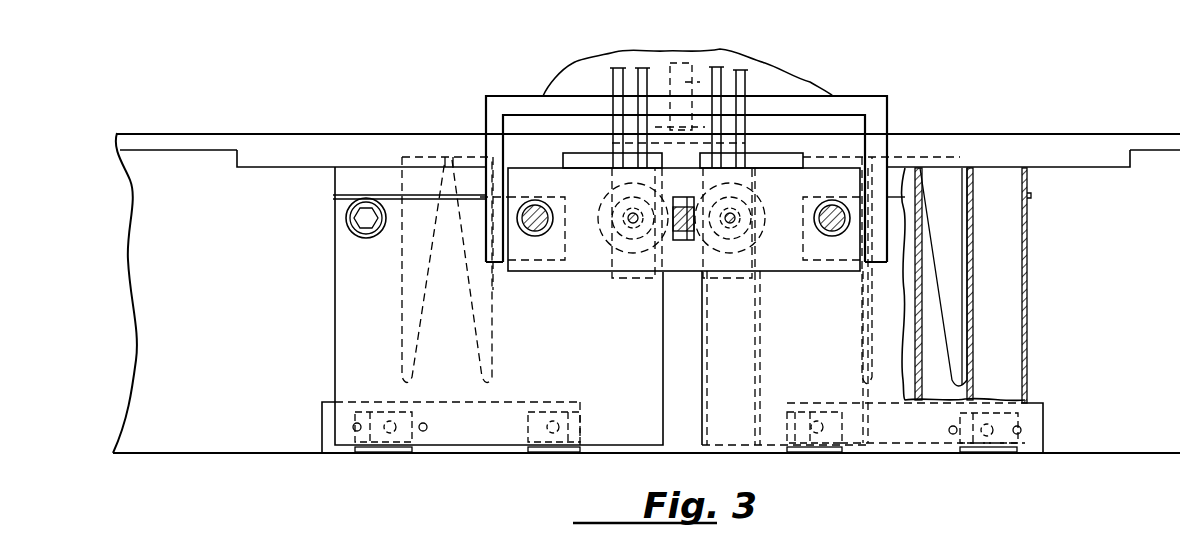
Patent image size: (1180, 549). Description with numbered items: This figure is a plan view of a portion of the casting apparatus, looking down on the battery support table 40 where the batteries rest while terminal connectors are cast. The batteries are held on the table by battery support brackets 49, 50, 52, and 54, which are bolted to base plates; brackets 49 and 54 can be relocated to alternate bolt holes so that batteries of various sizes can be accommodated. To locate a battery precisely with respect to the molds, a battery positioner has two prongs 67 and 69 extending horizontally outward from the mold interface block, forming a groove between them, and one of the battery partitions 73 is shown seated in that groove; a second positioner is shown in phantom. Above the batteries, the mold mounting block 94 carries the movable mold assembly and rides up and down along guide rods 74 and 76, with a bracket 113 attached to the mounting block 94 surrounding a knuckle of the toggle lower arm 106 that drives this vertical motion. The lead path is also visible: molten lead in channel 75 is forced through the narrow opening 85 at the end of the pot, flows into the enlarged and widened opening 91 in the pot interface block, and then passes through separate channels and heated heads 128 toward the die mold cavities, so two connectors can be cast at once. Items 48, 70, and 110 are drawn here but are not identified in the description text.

The battery support table 40 is at (175, 317).
The mounting block 48 is at (357, 317).
The battery support bracket 49 is at (363, 452).
The battery support bracket 50 is at (573, 453).
The battery support bracket 52 is at (793, 450).
The battery support bracket 54 is at (1012, 452).
The prong 67 is at (905, 180).
The prong 69 is at (942, 187).
The housing 70 is at (860, 103).
The battery partition 73 is at (922, 290).
The guide rod 74 is at (833, 232).
The channel 75 is at (660, 60).
The guide rod 76 is at (540, 232).
The narrow opening 85 is at (725, 68).
The enlarged and widened opening 91 is at (680, 127).
The mold mounting block 94 is at (590, 247).
The toggle lower arm 106 is at (688, 241).
The disc 110 is at (767, 233).
The bracket 113 is at (673, 240).
The heated chamber or head 128 is at (731, 281).